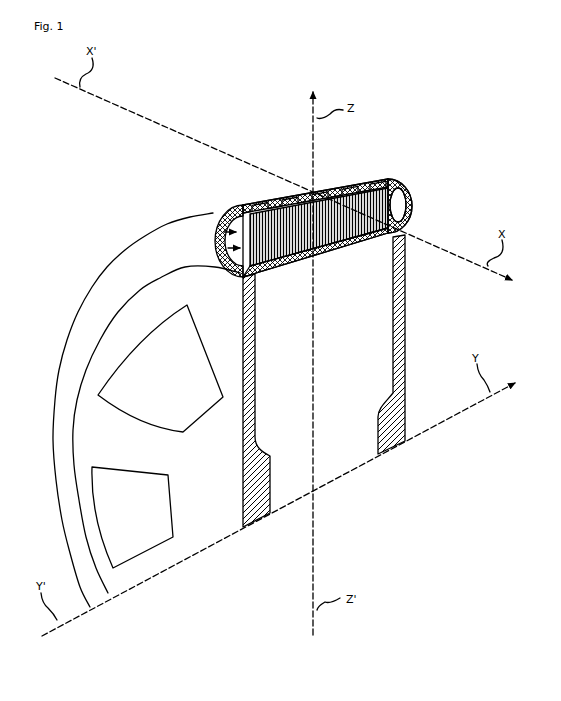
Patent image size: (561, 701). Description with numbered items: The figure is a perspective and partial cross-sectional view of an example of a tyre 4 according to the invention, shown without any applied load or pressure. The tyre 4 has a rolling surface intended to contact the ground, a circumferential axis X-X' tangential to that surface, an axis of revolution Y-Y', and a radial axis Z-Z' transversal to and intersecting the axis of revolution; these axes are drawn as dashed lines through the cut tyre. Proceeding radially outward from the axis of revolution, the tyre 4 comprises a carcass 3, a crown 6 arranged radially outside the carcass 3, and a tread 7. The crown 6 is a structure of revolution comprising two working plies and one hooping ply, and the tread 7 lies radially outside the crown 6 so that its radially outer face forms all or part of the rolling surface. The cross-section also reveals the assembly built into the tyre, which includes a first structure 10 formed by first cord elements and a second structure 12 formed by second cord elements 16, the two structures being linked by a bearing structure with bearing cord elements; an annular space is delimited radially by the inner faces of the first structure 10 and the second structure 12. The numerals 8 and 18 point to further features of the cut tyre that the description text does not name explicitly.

The carcass 3 is at (215, 245).
The tyre 4 is at (92, 197).
The crown 6 is at (127, 340).
The tread 7 is at (343, 180).
The end cap 8 is at (221, 212).
The first structure 10 is at (365, 182).
The second structure 12 is at (215, 267).
The second cord elements 16 is at (266, 207).
The air flow arrows 18 is at (392, 212).